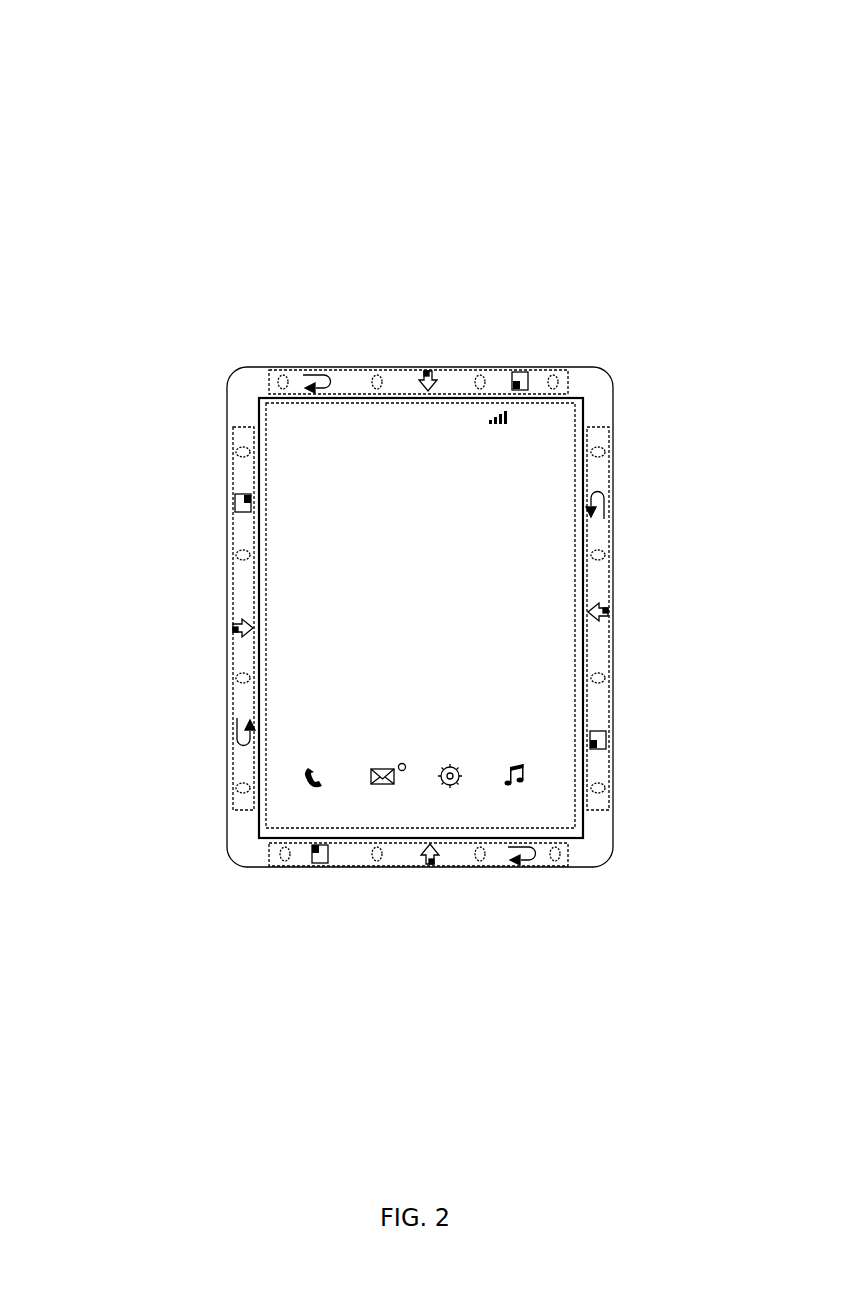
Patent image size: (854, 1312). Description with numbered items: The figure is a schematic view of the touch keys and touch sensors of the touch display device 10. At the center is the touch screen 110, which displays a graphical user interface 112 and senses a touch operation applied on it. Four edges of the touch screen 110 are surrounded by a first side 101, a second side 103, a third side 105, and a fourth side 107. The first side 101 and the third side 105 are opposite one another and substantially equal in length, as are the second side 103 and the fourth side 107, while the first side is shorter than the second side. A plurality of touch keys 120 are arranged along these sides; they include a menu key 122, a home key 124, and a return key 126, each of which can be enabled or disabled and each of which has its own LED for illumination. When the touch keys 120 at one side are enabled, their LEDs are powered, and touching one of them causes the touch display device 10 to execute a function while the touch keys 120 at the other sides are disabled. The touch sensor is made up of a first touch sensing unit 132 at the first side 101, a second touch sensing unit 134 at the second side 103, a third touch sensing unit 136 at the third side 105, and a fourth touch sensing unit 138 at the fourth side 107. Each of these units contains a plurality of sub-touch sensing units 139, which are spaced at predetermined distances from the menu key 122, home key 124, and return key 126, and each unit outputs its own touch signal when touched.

The touch display device 10 is at (437, 97).
The first side 101 is at (583, 868).
The second side 103 is at (228, 680).
The fourth side 107 is at (612, 675).
The touch screen 110 is at (263, 396).
The graphical user interface 112 is at (258, 838).
The third side 105 is at (479, 351).
The third touch sensing unit 136 is at (570, 386).
The touch keys 120 is at (473, 899).
The menu key 122 is at (320, 866).
The home key 124 is at (430, 866).
The return key 126 is at (517, 866).
The first touch sensing unit 132 is at (613, 845).
The second touch sensing unit 134 is at (191, 591).
The sub-touch sensing units 139 is at (243, 550).
The fourth touch sensing unit 138 is at (601, 427).